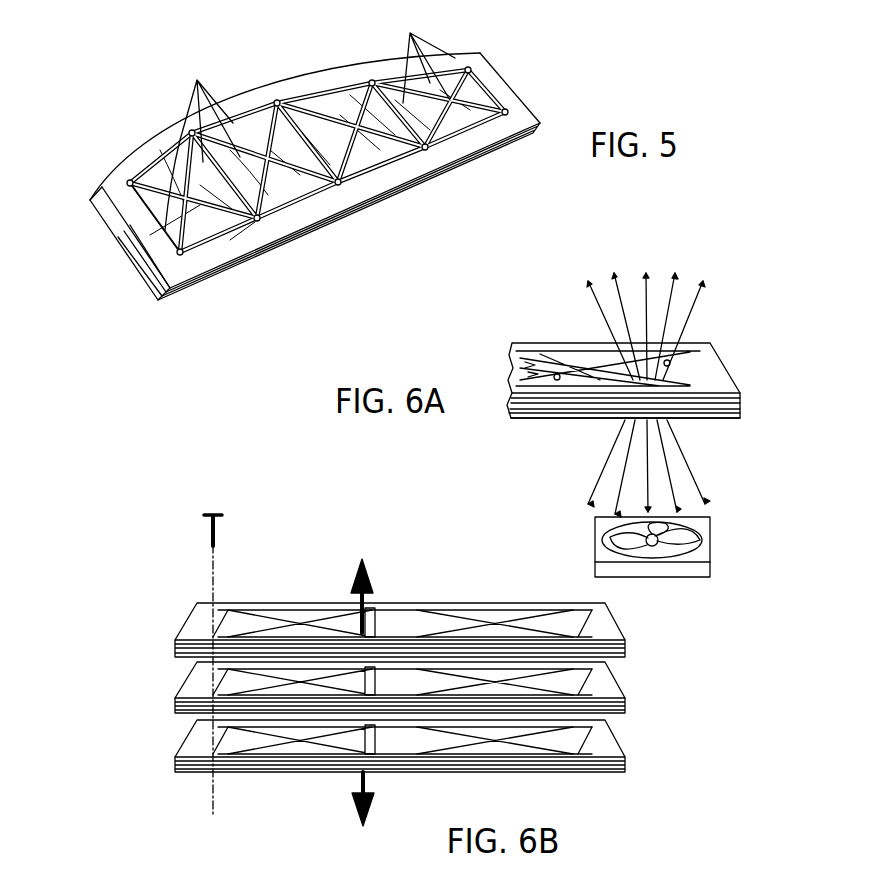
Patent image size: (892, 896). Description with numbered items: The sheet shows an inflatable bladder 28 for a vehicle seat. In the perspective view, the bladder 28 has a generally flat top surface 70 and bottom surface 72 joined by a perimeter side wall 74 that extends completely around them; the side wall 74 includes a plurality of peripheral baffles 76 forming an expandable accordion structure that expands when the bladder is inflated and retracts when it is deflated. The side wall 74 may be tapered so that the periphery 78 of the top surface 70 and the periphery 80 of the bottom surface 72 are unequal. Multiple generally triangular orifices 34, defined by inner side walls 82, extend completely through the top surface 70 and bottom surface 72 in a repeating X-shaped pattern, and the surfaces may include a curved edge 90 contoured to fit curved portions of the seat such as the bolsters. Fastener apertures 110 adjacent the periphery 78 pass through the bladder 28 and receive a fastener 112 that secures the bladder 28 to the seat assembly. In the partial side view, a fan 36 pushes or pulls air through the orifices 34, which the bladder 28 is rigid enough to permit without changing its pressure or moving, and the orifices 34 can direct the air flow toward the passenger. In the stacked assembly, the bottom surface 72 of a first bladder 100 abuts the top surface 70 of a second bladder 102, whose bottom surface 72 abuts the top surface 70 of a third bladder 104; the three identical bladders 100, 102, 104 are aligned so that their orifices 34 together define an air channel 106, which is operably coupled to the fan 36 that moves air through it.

In FIG. 6A, the inflatable bladder 28 is at (742, 288).
In FIG. 5, the orifices 34 is at (392, 150).
In FIG. 6A, the orifices 34 is at (622, 378).
In FIG. 6A, the fan 36 is at (700, 527).
In FIG. 5, the top surface 70 is at (318, 168).
In FIG. 6A, the top surface 70 is at (631, 378).
In FIG. 5, the bottom surface 72 is at (96, 212).
In FIG. 6A, the bottom surface 72 is at (711, 420).
In FIG. 5, the perimeter side wall 74 is at (147, 283).
In FIG. 6A, the perimeter side wall 74 is at (593, 408).
In FIG. 6A, the peripheral baffles 76 is at (741, 402).
In FIG. 5, the periphery of the top surface 78 is at (142, 258).
In FIG. 6A, the periphery of the top surface 78 is at (741, 388).
In FIG. 6A, the periphery of the bottom surface 80 is at (744, 420).
In FIG. 5, the inner side walls 82 is at (198, 80).
In FIG. 5, the curved edge 90 is at (150, 133).
In FIG. 6B, the first bladder 100 is at (404, 627).
In FIG. 6B, the second bladder 102 is at (404, 691).
In FIG. 6B, the third bladder 104 is at (404, 770).
In FIG. 6B, the air channel 106 is at (367, 598).
In FIG. 5, the fastener apertures 110 is at (130, 183).
In FIG. 6A, the fastener apertures 110 is at (683, 388).
In FIG. 6B, the fastener 112 is at (224, 532).